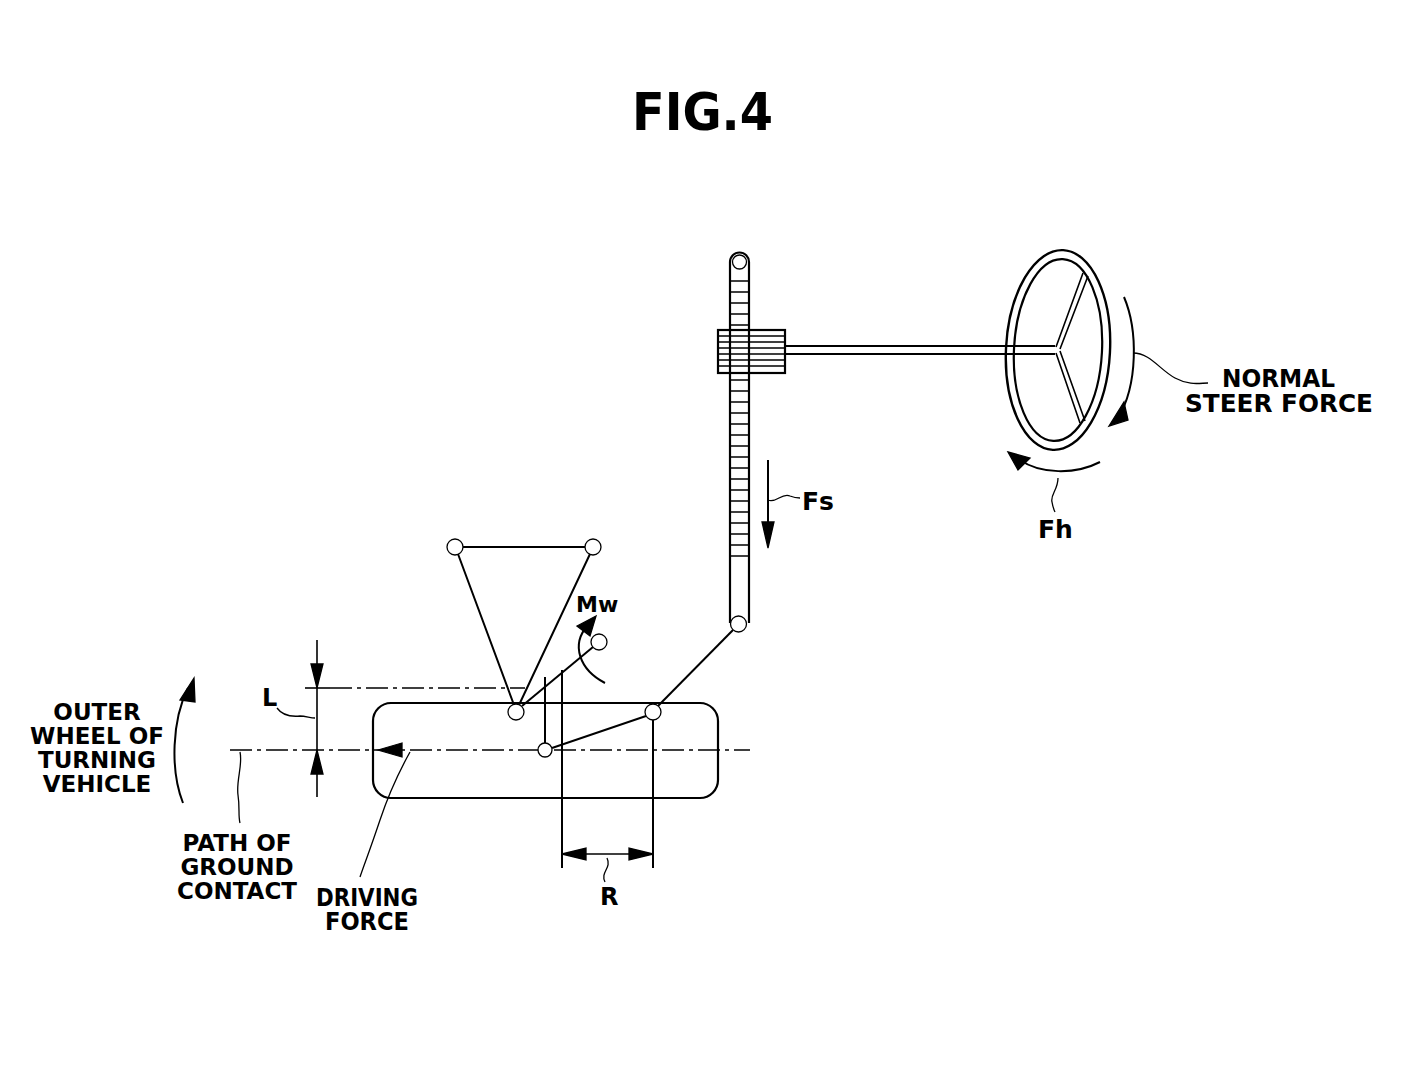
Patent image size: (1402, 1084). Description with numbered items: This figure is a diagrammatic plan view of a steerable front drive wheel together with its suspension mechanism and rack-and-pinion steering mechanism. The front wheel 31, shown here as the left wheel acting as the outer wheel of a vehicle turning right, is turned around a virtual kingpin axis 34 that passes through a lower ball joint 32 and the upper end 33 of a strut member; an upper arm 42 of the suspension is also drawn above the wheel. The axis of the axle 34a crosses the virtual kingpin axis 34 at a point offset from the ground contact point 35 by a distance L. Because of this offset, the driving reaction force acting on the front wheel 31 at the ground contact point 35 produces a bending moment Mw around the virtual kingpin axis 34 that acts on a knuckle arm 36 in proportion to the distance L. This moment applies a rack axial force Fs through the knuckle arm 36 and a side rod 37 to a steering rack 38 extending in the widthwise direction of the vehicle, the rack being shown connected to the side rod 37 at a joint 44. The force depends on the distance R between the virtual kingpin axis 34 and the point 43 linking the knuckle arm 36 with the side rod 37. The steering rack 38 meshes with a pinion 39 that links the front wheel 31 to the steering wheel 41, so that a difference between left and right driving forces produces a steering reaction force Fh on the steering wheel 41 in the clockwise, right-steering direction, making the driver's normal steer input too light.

The front wheel 31 is at (705, 785).
The lower ball joint 32 is at (510, 723).
The upper end of strut member 33 is at (606, 636).
The virtual kingpin axis 34 is at (587, 653).
The axle 34a is at (542, 720).
The ground contact point 35 is at (543, 758).
The knuckle arm 36 is at (600, 733).
The side rod 37 is at (707, 661).
The steering rack 38 is at (730, 437).
The pinion 39 is at (786, 336).
The steering wheel 41 is at (1102, 292).
The upper arm 42 is at (518, 545).
The point linking knuckle arm with side rod 43 is at (660, 720).
The rack end joint 44 is at (748, 626).